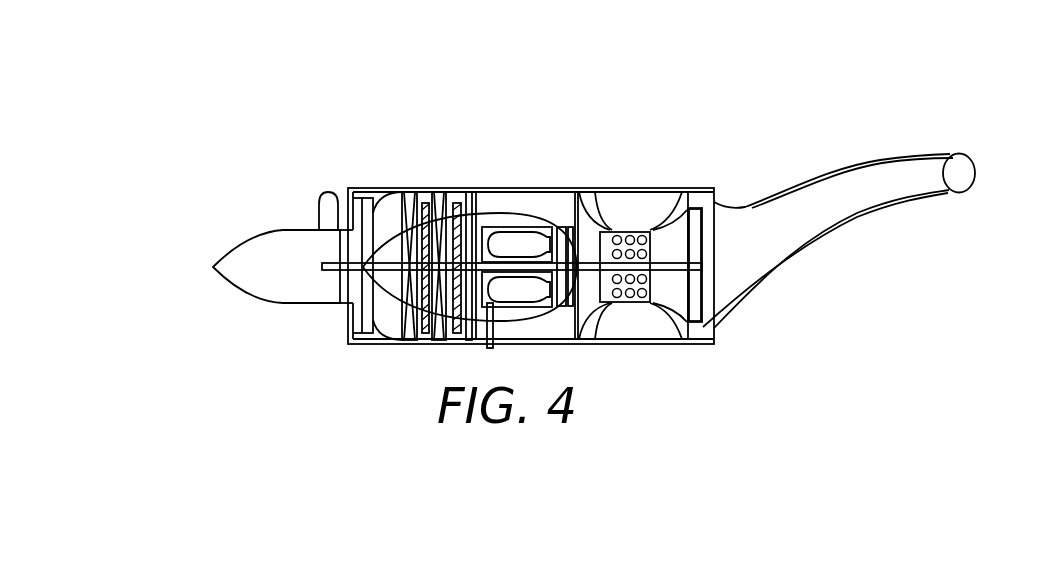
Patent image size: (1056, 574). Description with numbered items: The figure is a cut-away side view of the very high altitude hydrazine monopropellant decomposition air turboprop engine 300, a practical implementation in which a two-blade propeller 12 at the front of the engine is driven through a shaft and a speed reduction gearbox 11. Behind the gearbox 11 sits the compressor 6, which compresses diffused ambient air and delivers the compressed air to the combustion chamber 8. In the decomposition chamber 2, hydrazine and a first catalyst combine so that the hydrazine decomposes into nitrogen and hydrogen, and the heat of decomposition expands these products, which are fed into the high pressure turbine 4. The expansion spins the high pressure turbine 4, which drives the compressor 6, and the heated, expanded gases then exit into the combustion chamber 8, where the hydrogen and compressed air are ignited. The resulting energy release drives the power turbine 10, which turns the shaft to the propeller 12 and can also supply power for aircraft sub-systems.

The HDAT engine 300 is at (195, 130).
The propeller 12 is at (318, 212).
The speed reduction gearbox 11 is at (347, 303).
The compressor 6 is at (417, 190).
The decomposition chamber 2 is at (507, 245).
The high pressure turbine 4 is at (557, 288).
The combustion chamber 8 is at (694, 220).
The power turbine 10 is at (697, 292).